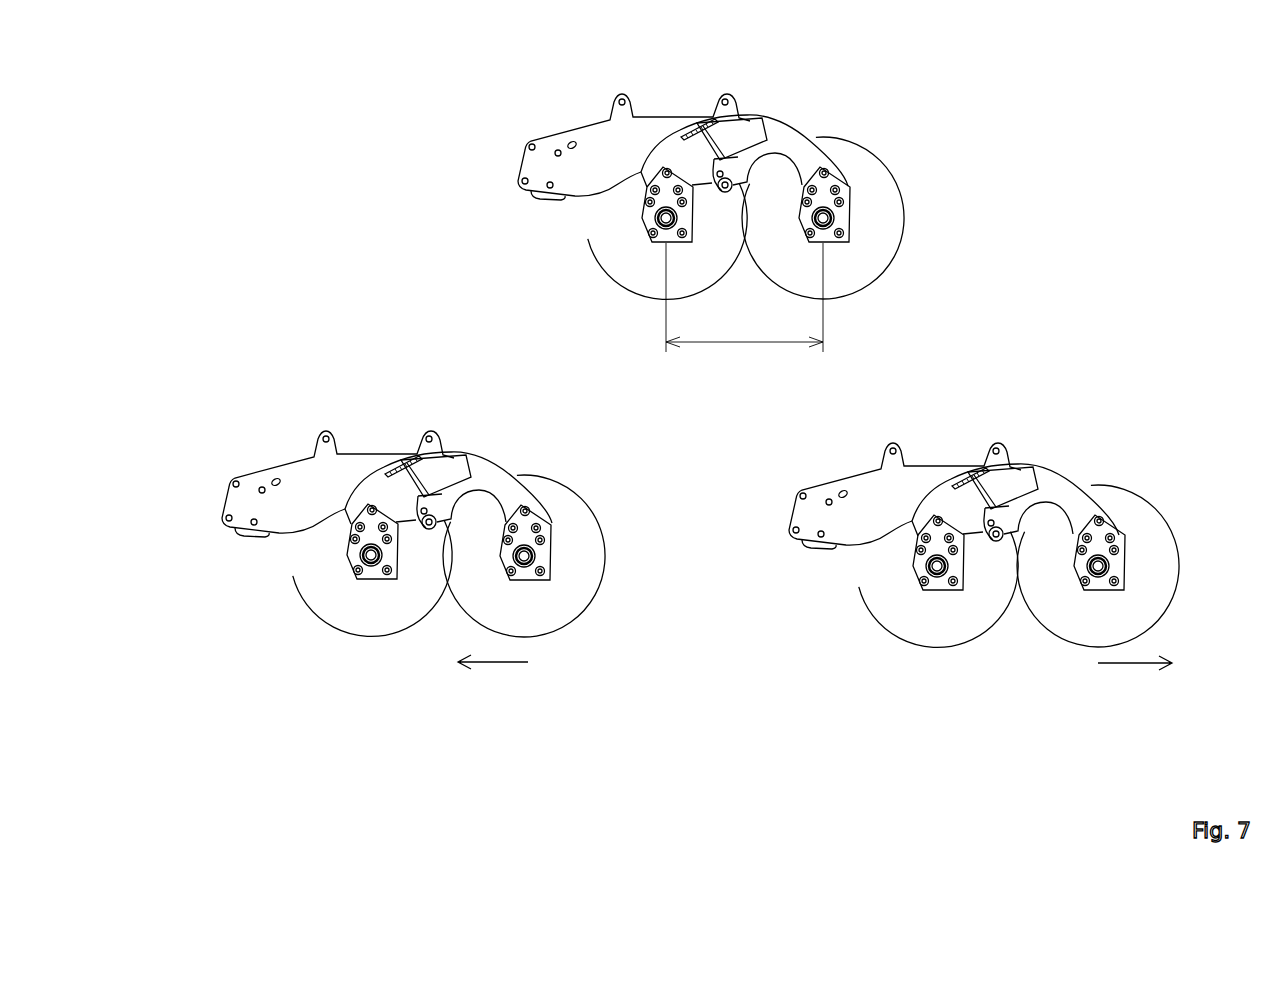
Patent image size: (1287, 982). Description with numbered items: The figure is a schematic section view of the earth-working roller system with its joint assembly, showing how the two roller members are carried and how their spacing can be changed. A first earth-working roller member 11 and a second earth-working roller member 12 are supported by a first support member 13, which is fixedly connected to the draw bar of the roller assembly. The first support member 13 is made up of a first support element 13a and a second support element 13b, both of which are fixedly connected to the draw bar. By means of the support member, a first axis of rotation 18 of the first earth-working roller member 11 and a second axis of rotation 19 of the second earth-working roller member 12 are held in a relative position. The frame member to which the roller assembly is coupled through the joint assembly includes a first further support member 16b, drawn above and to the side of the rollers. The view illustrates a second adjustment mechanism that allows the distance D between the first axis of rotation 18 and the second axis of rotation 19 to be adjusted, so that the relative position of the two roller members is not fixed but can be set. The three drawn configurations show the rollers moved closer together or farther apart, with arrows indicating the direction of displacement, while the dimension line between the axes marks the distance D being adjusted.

The first earth-working roller member 11 is at (597, 223).
The second earth-working roller member 12 is at (877, 170).
The first support member 13 is at (778, 135).
The first support element 13a is at (965, 497).
The second support element 13b is at (1073, 507).
The first further support member 16b is at (592, 133).
The first axis of rotation 18 is at (655, 225).
The second axis of rotation 19 is at (835, 221).
The distance D is at (737, 342).